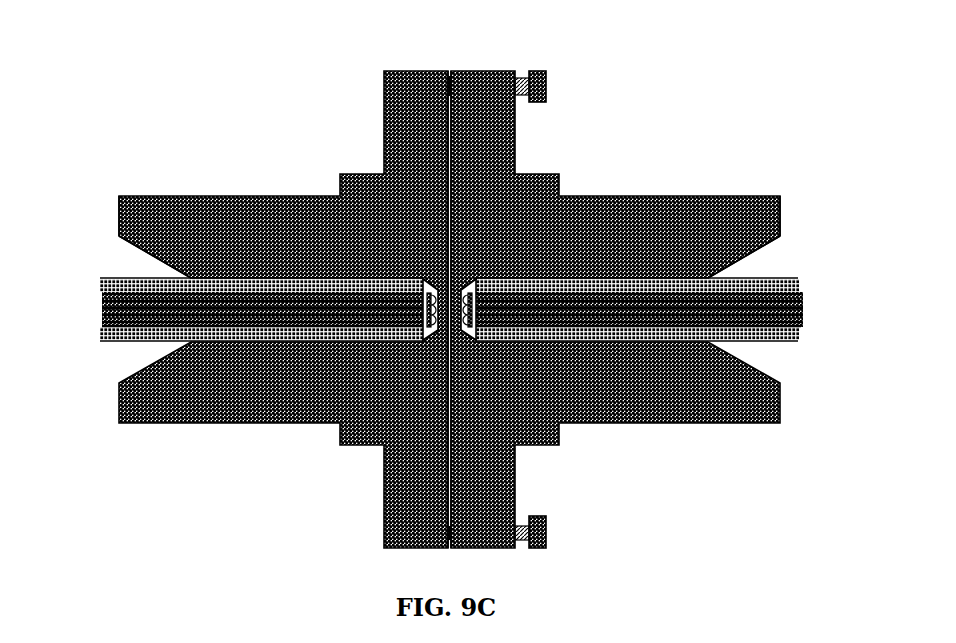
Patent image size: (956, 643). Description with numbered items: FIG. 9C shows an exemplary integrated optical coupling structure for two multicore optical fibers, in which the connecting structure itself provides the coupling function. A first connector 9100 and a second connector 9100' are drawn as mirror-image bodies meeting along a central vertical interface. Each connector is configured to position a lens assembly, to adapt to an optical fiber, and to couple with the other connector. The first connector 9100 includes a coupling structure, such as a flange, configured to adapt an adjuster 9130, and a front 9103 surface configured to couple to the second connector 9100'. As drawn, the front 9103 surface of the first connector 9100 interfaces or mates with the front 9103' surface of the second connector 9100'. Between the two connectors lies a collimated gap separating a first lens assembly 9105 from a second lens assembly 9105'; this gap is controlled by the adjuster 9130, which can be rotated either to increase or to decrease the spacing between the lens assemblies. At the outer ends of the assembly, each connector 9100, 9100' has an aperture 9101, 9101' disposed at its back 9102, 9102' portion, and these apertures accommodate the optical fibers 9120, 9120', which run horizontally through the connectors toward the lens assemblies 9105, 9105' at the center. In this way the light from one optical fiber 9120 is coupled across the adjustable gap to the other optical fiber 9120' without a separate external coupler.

The first connector 9100 is at (278, 309).
The second connector 9100' is at (620, 309).
The aperture 9101 is at (114, 252).
The aperture 9101' is at (784, 252).
The back 9102 is at (90, 191).
The back 9102' is at (810, 191).
The front 9103 is at (377, 282).
The front 9103' is at (538, 309).
The first lens assembly 9105 is at (346, 216).
The second lens assembly 9105' is at (553, 388).
The optical fiber 9120 is at (234, 347).
The optical fiber 9120' is at (665, 347).
The adjuster 9130 is at (538, 75).